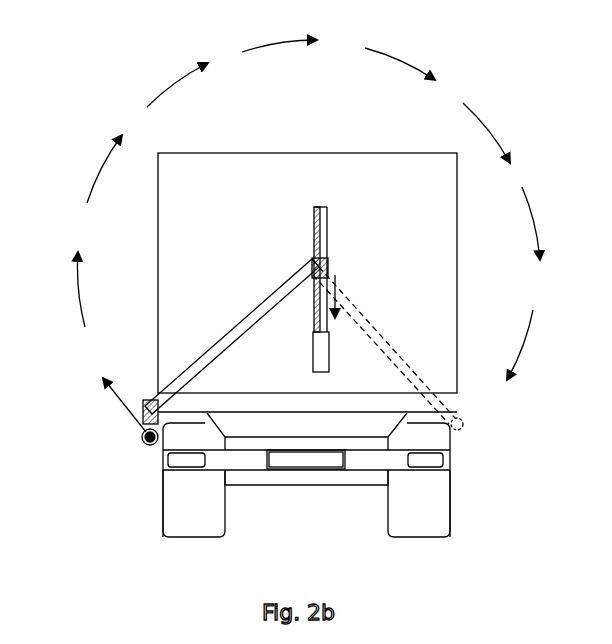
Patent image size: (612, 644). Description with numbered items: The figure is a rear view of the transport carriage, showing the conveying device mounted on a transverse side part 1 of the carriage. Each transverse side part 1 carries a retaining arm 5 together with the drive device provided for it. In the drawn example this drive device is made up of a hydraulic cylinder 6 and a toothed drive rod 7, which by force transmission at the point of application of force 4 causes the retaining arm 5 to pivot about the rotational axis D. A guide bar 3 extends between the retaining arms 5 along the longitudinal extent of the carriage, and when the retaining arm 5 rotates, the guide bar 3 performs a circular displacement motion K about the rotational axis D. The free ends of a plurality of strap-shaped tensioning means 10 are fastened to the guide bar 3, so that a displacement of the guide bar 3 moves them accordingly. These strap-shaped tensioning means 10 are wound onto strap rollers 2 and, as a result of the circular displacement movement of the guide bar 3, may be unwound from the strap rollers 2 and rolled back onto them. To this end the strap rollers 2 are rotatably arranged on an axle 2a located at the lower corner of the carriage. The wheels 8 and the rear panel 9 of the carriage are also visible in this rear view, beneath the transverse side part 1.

The circular displacement motion K is at (100, 165).
The transverse side part 1 is at (445, 255).
The strap roller 2 is at (148, 446).
The axle 2a is at (145, 441).
The guide bar 3 is at (145, 392).
The point of application of force 4 is at (328, 264).
The retaining arm 5 is at (255, 305).
The hydraulic cylinder 6 is at (316, 352).
The toothed drive rod 7 is at (327, 226).
The wheels 8 is at (195, 522).
The license plate / rear panel 9 is at (312, 403).
The strap-shaped tensioning means 10 is at (140, 436).
The rotational axis D is at (305, 262).